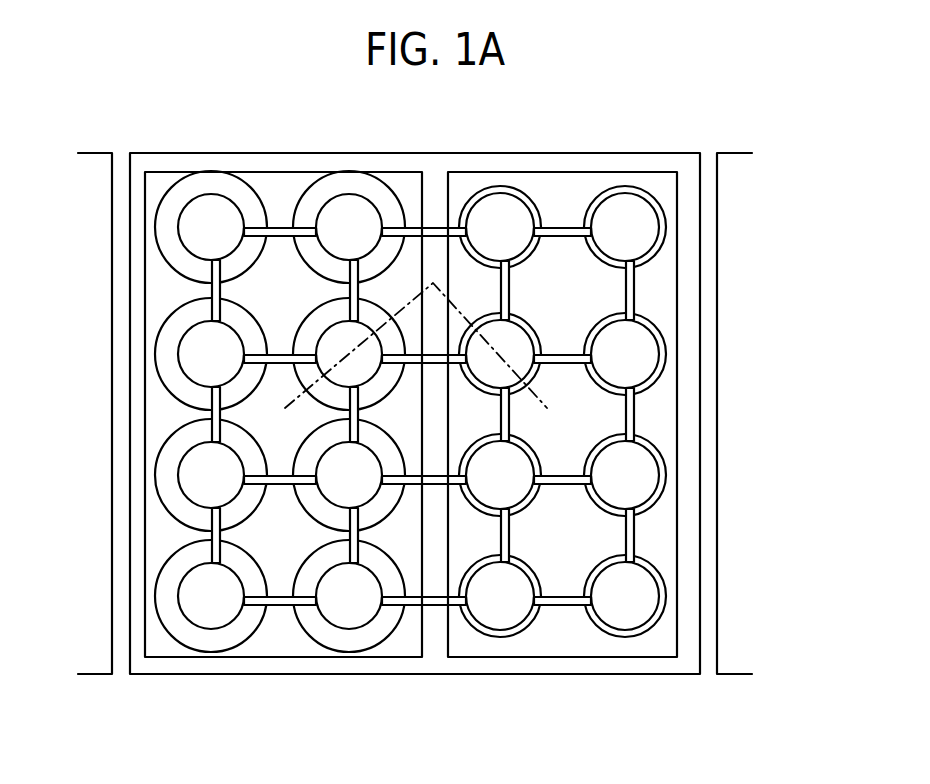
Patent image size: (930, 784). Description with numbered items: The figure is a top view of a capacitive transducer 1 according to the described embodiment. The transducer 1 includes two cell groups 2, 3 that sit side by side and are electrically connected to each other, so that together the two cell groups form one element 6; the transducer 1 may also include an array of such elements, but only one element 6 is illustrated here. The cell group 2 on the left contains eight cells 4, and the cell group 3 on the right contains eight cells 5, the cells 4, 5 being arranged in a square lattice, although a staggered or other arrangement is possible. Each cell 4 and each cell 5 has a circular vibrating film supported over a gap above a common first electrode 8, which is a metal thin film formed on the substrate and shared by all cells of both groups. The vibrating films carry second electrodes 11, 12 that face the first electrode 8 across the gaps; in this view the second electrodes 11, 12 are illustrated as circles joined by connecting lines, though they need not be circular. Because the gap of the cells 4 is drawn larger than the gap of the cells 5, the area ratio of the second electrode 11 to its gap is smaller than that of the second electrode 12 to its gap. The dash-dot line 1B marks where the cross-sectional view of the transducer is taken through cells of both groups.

The capacitive transducer 1 is at (60, 150).
The cell group 2 is at (147, 598).
The cell group 3 is at (677, 603).
The cell 4 is at (305, 263).
The cell 5 is at (593, 258).
The element 6 is at (128, 678).
The first electrode 8 is at (700, 652).
The second electrode 11 is at (320, 497).
The second electrode 12 is at (590, 494).
The line 1B- 1B is at (426, 359).